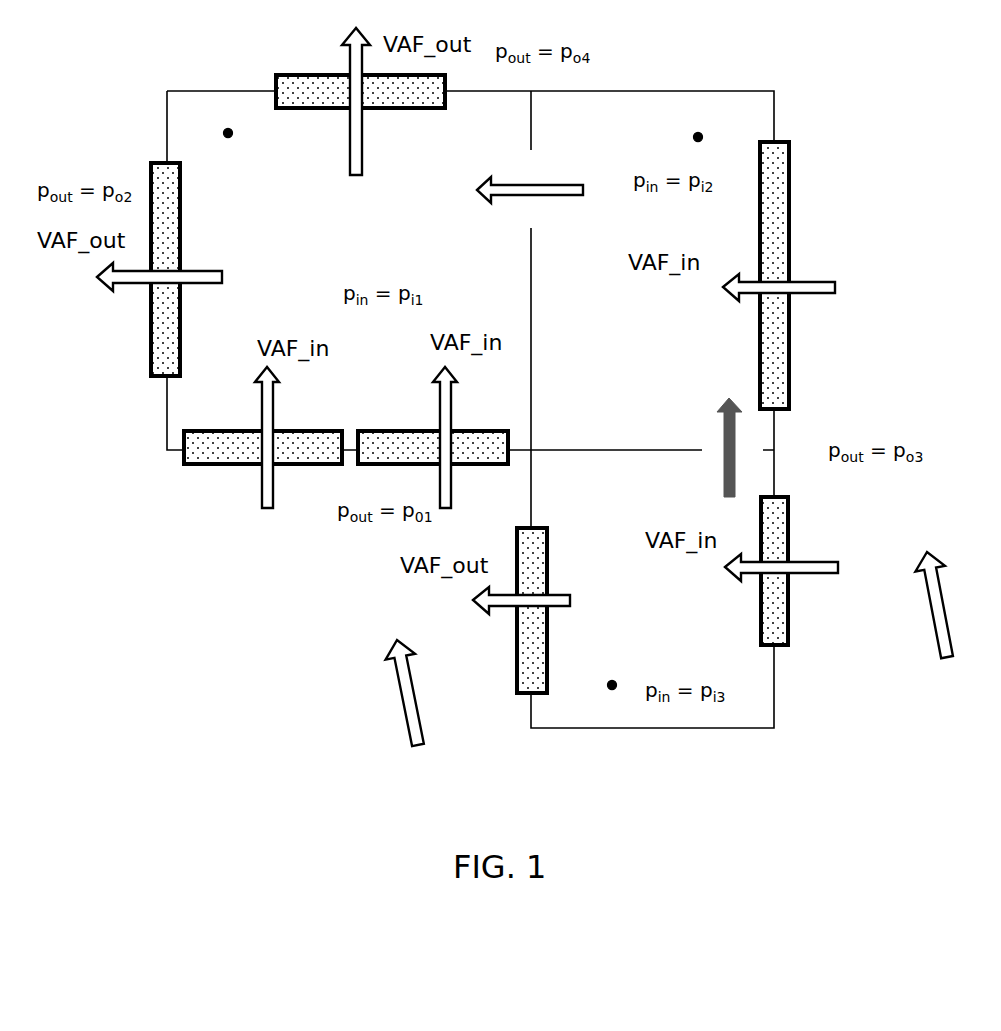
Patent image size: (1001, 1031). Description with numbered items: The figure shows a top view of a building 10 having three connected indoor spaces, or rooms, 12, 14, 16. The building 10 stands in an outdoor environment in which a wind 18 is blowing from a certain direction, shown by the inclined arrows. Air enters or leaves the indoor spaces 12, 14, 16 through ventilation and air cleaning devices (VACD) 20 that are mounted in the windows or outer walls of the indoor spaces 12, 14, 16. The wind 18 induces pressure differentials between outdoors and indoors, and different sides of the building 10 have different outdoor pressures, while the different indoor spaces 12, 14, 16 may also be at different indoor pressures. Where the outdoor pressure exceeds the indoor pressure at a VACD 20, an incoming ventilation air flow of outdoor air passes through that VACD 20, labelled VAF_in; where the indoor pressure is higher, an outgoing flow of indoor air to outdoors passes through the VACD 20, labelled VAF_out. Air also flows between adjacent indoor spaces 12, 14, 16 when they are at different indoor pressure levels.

The building 10 is at (774, 112).
The indoor space 12 is at (228, 133).
The indoor space 14 is at (698, 134).
The indoor space 16 is at (612, 690).
The wind 18 is at (393, 678).
The ventilation and air cleaning device (VACD) 20 is at (292, 76).